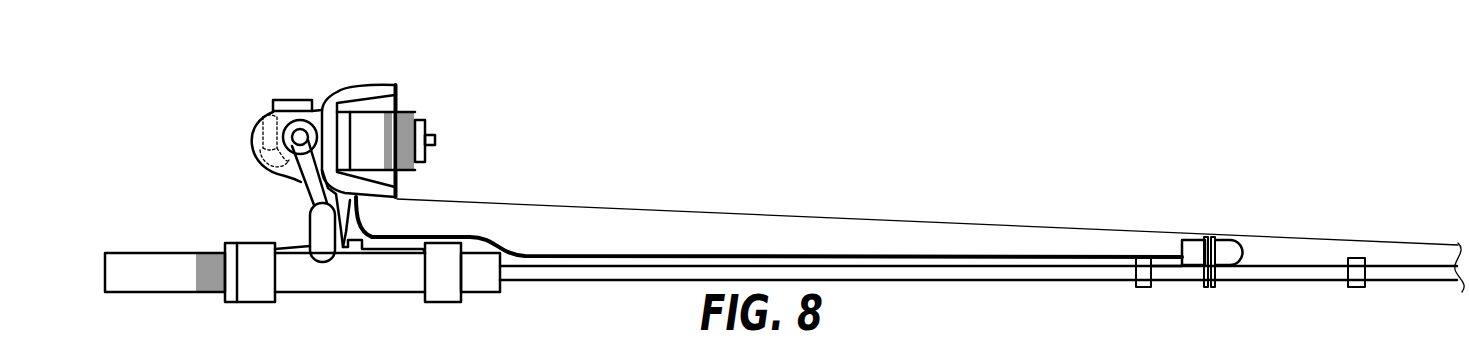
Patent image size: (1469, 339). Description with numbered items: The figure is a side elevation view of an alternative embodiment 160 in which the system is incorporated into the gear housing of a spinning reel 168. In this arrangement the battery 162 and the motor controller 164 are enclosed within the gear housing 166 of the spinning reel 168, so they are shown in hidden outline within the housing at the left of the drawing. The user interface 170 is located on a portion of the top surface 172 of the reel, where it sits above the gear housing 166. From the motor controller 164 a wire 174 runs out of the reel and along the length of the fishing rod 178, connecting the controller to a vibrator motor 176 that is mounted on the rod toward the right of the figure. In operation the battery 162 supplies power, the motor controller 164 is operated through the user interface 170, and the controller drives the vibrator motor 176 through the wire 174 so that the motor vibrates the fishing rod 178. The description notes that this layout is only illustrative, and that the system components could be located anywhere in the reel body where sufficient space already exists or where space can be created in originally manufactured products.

The embodiment 160 is at (486, 114).
The battery 162 is at (253, 130).
The motor controller 164 is at (258, 155).
The gear housing 166 is at (256, 170).
The spinning reel 168 is at (385, 78).
The user interface 170 is at (295, 99).
The top surface 172 is at (273, 111).
The wire 174 is at (550, 255).
The vibrator motor 176 is at (1197, 240).
The fishing rod 178 is at (1187, 272).